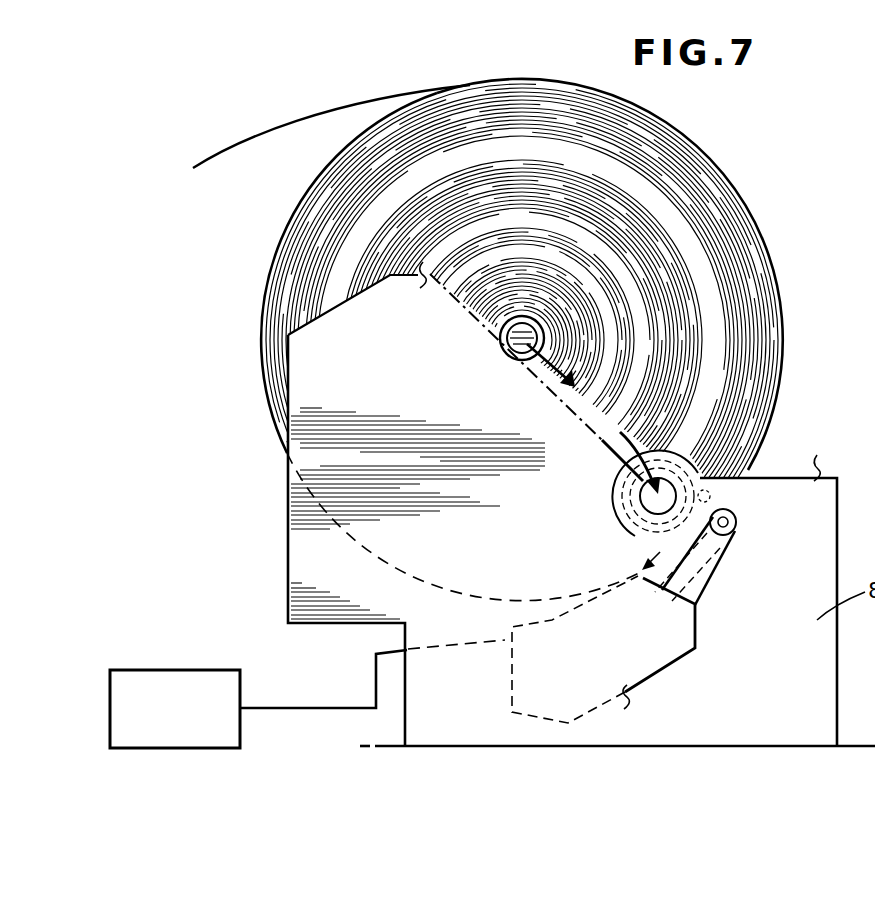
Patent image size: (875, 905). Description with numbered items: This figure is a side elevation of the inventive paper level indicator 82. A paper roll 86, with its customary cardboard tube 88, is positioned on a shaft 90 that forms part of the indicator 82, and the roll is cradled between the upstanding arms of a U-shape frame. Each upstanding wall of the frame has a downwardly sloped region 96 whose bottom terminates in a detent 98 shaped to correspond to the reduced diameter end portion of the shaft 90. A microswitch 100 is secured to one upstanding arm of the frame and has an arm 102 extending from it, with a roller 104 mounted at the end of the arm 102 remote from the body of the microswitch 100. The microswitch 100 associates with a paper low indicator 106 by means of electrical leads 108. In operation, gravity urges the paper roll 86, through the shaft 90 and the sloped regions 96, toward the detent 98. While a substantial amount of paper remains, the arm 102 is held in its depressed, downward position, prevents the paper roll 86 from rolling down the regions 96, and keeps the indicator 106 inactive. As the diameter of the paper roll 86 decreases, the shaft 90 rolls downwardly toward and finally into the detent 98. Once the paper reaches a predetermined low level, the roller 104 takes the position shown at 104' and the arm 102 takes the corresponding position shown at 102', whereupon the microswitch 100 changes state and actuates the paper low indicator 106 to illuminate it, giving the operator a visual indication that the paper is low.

The paper level indicator 82 is at (768, 172).
The paper roll 86 is at (774, 349).
The cardboard tube 88 is at (527, 318).
The shaft 90 is at (510, 343).
The downwardly sloped region 96 is at (492, 324).
The detent 98 is at (640, 511).
The microswitch 100 is at (690, 658).
The arm 102 is at (722, 561).
The arm low-paper position 102' is at (647, 567).
The roller 104 is at (750, 531).
The roller low-paper position 104' is at (750, 497).
The paper low indicator 106 is at (181, 668).
The electrical leads 108 is at (438, 648).